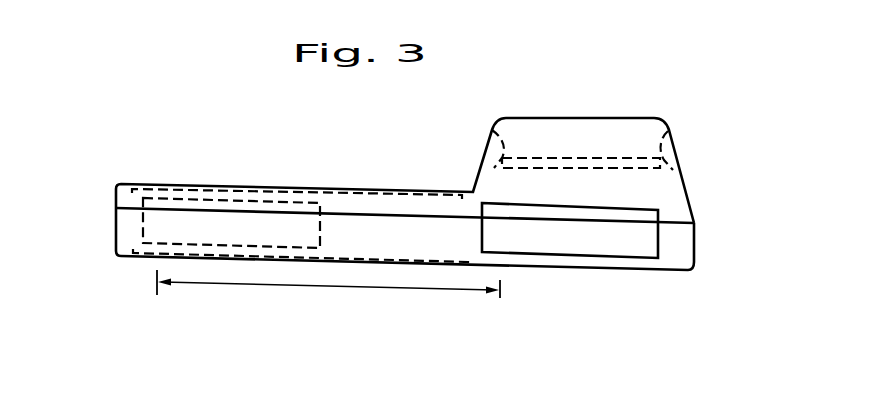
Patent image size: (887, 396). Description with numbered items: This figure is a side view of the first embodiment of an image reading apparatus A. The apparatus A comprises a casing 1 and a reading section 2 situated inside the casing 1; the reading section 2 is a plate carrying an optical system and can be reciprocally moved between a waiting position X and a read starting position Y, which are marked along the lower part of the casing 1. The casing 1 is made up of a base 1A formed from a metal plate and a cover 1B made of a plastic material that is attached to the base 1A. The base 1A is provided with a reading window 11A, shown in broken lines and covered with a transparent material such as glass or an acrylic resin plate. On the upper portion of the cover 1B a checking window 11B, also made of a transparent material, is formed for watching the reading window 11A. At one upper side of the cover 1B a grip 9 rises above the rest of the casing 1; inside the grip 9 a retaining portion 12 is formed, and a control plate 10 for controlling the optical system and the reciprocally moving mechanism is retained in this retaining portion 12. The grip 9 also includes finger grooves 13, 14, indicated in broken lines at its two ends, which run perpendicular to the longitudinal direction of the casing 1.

The casing 1 is at (712, 240).
The base 1A is at (677, 253).
The cover 1B is at (682, 208).
The reading section 2 is at (597, 238).
The grip 9 is at (542, 135).
The control plate 10 is at (638, 158).
The reading window 11A is at (135, 250).
The checking window 11B is at (320, 188).
The retaining portion 12 is at (593, 147).
The finger groove 13 is at (492, 148).
The finger groove 14 is at (673, 148).
The image reading apparatus A is at (222, 180).
The waiting position X is at (498, 304).
The read starting position Y is at (320, 298).